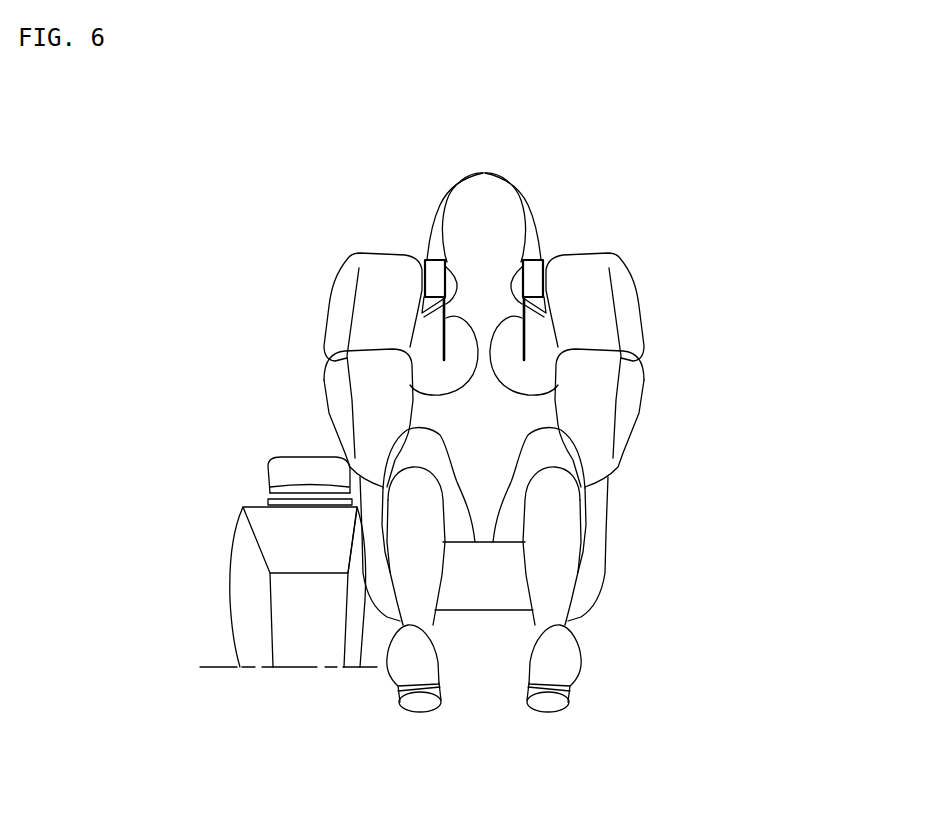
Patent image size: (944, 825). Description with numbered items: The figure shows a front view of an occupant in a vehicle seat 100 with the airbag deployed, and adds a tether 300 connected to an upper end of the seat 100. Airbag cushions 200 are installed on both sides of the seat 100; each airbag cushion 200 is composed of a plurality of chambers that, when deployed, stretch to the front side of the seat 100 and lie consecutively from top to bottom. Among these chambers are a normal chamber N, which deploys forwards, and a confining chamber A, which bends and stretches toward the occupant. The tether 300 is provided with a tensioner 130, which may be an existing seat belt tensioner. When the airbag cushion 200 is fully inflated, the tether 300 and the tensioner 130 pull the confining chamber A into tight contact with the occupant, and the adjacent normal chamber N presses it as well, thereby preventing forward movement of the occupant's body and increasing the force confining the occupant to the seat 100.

The seat 100 is at (521, 188).
The tensioner 130 is at (430, 256).
The airbag cushion 200 is at (622, 236).
The tether 300 is at (440, 333).
The confining chamber A is at (537, 337).
The normal chamber N is at (608, 312).